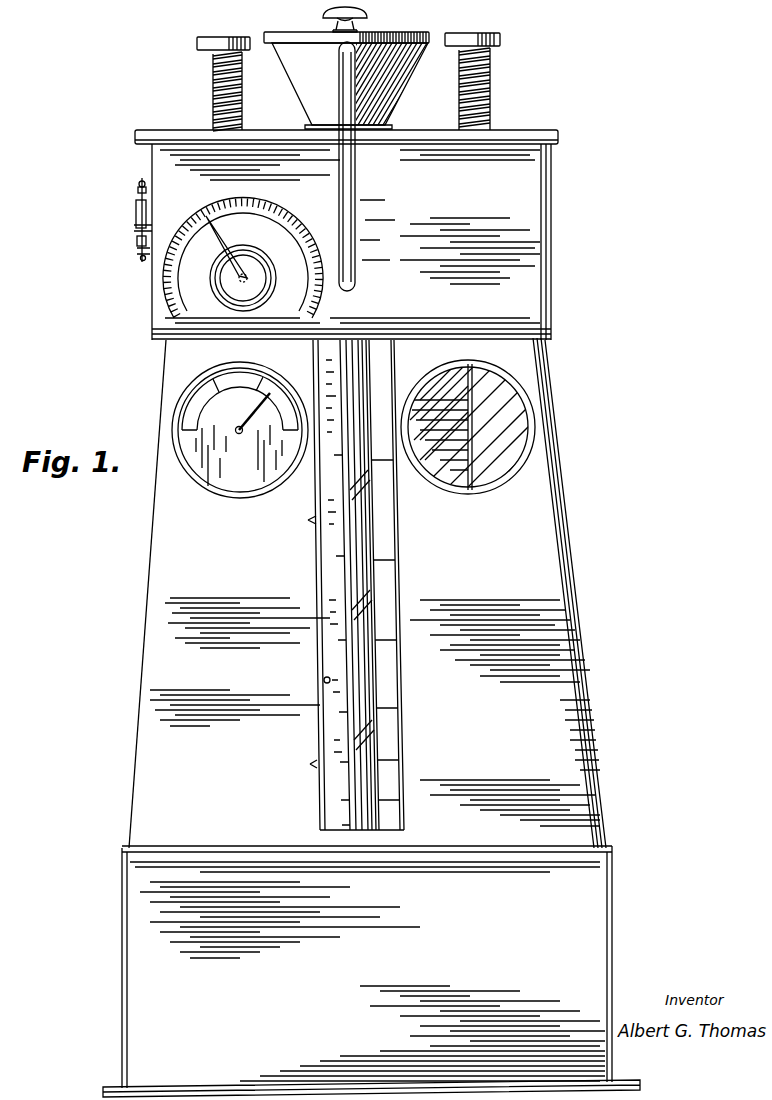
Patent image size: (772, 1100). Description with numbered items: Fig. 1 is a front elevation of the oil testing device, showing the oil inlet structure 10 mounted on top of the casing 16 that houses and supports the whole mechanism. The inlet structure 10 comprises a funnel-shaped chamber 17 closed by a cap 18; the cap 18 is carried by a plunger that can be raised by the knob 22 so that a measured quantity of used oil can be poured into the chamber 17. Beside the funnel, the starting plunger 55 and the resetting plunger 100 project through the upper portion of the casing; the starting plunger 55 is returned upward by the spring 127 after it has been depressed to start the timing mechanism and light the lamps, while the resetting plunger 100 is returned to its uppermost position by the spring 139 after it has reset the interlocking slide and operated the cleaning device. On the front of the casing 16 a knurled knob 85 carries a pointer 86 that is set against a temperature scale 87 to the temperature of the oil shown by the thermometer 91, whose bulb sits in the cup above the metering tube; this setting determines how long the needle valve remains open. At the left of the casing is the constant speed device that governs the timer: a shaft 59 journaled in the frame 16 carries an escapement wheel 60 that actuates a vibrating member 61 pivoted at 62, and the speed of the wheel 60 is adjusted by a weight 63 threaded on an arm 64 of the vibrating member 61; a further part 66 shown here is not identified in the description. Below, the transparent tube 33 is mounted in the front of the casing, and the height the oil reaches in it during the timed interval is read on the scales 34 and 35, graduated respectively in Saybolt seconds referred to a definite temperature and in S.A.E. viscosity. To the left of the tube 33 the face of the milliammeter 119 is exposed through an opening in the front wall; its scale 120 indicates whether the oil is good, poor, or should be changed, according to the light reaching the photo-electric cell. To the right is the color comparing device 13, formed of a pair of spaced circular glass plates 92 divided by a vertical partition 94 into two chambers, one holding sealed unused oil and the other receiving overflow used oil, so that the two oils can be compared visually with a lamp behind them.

The oil inlet structure 10 is at (436, 25).
The color comparing device 13 is at (531, 379).
The casing 16 is at (550, 257).
The funnel-shaped chamber 17 is at (398, 98).
The cap 18 is at (318, 32).
The knob 22 is at (370, 15).
The transparent tube 33 is at (349, 600).
The scale 34 is at (388, 541).
The scale 35 is at (326, 678).
The starting plunger 55 is at (500, 39).
The shaft 59 is at (137, 240).
The escapement wheel 60 is at (143, 260).
The vibrating member 61 is at (137, 229).
The pivot 62 is at (137, 208).
The weight 63 is at (139, 190).
The arm 64 is at (141, 182).
The washer 66 is at (139, 252).
The knurled knob 85 is at (262, 318).
The pointer 86 is at (220, 250).
The temperature scale 87 is at (305, 230).
The thermometer 91 is at (356, 208).
The glass plates 92 is at (528, 428).
The vertical partition 94 is at (482, 468).
The resetting plunger 100 is at (197, 46).
The milliammeter 119 is at (192, 446).
The scale 120 is at (194, 385).
The spring 127 is at (490, 108).
The spring 139 is at (214, 84).